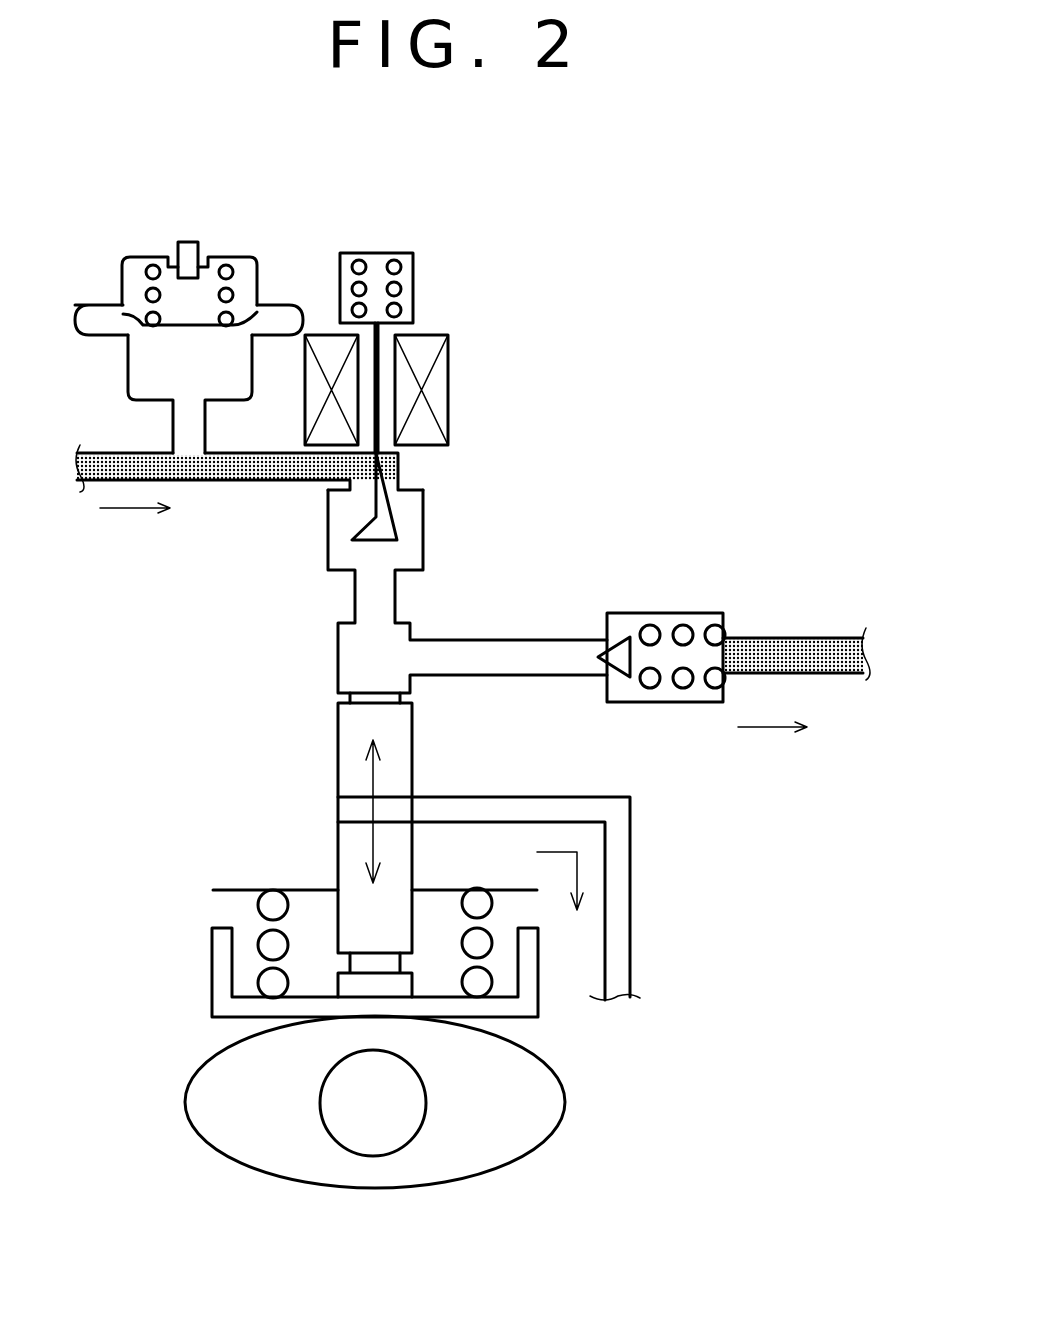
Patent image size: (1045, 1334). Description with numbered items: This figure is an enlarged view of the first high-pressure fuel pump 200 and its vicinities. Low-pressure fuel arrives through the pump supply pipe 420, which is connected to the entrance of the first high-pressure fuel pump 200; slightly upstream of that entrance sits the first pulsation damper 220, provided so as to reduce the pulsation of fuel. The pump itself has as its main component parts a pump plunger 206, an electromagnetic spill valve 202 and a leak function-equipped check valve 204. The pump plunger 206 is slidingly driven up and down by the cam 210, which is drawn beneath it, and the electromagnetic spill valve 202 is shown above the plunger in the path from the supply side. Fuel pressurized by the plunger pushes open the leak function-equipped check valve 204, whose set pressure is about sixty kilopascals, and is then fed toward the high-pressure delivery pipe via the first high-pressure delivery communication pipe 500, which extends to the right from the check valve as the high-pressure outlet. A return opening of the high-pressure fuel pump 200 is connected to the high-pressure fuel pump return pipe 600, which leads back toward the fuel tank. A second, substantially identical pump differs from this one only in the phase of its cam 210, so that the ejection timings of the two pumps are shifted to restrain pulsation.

The first high-pressure fuel pump 200 is at (474, 593).
The electromagnetic spill valve 202 is at (492, 360).
The leak function-equipped check valve 204 is at (670, 612).
The pump plunger 206 is at (303, 850).
The cam 210 is at (493, 1170).
The first pulsation damper 220 is at (228, 255).
The pump supply pipe 420 is at (252, 482).
The first high-pressure delivery communication pipe 500 is at (790, 643).
The high-pressure fuel pump return pipe 600 is at (620, 862).